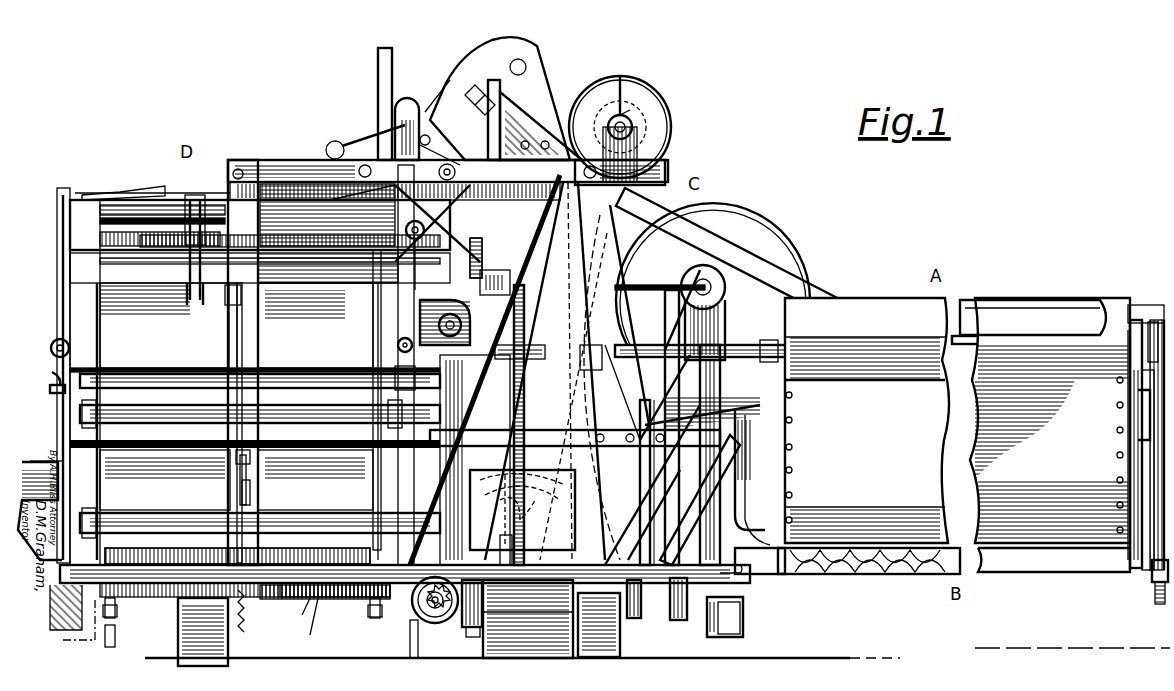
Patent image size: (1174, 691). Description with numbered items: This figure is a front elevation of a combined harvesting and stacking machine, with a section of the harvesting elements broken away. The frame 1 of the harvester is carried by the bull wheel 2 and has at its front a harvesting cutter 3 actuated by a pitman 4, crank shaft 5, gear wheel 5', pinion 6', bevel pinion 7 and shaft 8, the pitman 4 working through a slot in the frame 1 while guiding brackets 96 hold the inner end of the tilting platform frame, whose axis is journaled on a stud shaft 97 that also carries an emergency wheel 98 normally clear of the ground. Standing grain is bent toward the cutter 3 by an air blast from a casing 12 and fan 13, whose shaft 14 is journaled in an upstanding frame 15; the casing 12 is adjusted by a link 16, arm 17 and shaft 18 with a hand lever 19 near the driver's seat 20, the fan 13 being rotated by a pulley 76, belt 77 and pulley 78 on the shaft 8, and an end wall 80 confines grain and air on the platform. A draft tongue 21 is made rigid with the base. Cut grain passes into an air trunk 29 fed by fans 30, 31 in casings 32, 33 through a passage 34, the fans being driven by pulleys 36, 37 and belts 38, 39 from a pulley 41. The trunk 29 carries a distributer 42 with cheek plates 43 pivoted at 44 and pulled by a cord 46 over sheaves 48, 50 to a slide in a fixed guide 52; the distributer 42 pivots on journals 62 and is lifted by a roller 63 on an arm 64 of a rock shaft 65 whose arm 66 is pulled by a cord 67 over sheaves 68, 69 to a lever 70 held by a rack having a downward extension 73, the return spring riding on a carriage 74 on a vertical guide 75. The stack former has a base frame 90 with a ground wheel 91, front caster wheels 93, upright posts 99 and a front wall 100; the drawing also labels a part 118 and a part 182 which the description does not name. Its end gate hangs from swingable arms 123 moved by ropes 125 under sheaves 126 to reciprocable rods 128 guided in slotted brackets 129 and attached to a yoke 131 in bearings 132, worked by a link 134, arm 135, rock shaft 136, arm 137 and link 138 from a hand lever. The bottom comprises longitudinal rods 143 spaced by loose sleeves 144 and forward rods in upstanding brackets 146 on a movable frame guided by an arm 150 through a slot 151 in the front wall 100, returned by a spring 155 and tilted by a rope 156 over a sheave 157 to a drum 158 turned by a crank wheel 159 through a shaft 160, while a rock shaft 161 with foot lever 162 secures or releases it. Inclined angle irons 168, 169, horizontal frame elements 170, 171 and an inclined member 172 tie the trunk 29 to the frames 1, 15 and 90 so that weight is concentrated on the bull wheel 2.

The frame 1 is at (1020, 575).
The bull wheel 2 is at (530, 660).
The harvesting cutter 3 is at (910, 575).
The pitman 4 is at (758, 570).
The crank shaft 5 is at (455, 617).
The gear wheel 5' is at (467, 646).
The pinion 6' is at (421, 600).
The bevel pinion 7 is at (410, 623).
The shaft 8 is at (640, 600).
The casing 12 is at (957, 420).
The fan 13 is at (995, 318).
The shaft 14 is at (745, 345).
The frame 15 is at (1140, 520).
The link 16 is at (795, 422).
The arm 17 is at (790, 375).
The shaft 18 is at (647, 392).
The hand lever 19 is at (640, 530).
The driver's seat 20 is at (778, 320).
The tongue 21 is at (185, 576).
The air trunk 29 is at (620, 270).
The fan 30 is at (652, 284).
The fan 31 is at (624, 95).
The casing 32 is at (745, 212).
The casing 33 is at (655, 118).
The passage 34 is at (752, 477).
The pulley 36 is at (690, 275).
The pulley 37 is at (632, 112).
The belt 38 is at (545, 371).
The belt 39 is at (520, 292).
The pulley 41 is at (420, 620).
The distributer 42 is at (495, 60).
The cheek plates 43 is at (430, 115).
The pivot 44 is at (440, 90).
The cord 46 is at (455, 142).
The sheave 48 is at (435, 126).
The sheave 50 is at (480, 284).
The guide 52 is at (458, 312).
The journals 62 is at (526, 64).
The roller 63 is at (425, 232).
The arm 64 is at (500, 190).
The rock shaft 65 is at (575, 178).
The arm 66 is at (498, 118).
The cord 67 is at (535, 110).
The sheave 68 is at (569, 371).
The sheave 69 is at (450, 168).
The hand or foot lever 70 is at (516, 395).
The downward extension 73 is at (395, 500).
The carriage 74 is at (375, 128).
The vertical guide 75 is at (378, 74).
The pulley 76 is at (682, 310).
The belt 77 is at (672, 421).
The pulley 78 is at (680, 622).
The end wall 80 is at (1135, 415).
The base frame 90 is at (145, 598).
The ground wheel 91 is at (40, 510).
The front ground wheels 93 is at (178, 636).
The guiding brackets 96 is at (745, 628).
The stud shaft 97 is at (652, 485).
The emergency wheel 98 is at (1152, 585).
The upright posts 99 is at (97, 330).
The front wall 100 is at (164, 325).
The beam 118 is at (365, 282).
The swingable arms 123 is at (57, 198).
The ropes 125 is at (70, 258).
The sheaves 126 is at (52, 348).
The reciprocable rods 128 is at (50, 390).
The slotted brackets 129 is at (50, 375).
The yoke 131 is at (68, 423).
The bearings 132 is at (95, 520).
The link 134 is at (228, 300).
The arm 135 is at (236, 350).
The rock shaft 136 is at (210, 412).
The arm 137 is at (378, 386).
The link 138 is at (440, 320).
The longitudinal rods 143 is at (289, 621).
The loose sleeves 144 is at (301, 629).
The upstanding brackets 146 is at (453, 240).
The forwardly extending arm 150 is at (246, 492).
The slot 151 is at (240, 465).
The spring 155 is at (300, 600).
The rope 156 is at (185, 265).
The sheave 157 is at (195, 195).
The drum 158 is at (185, 295).
The crank wheel 159 is at (573, 396).
The shaft 160 is at (315, 325).
The rock shaft 161 is at (340, 598).
The foot lever 162 is at (515, 540).
The inclined angle iron frame elements 168 is at (810, 285).
The inclined angle iron frame elements 169 is at (491, 258).
The horizontal frame element 170 is at (700, 500).
The horizontal frame element 171 is at (492, 440).
The inclined frame member 172 is at (140, 192).
The bolt 182 is at (70, 647).